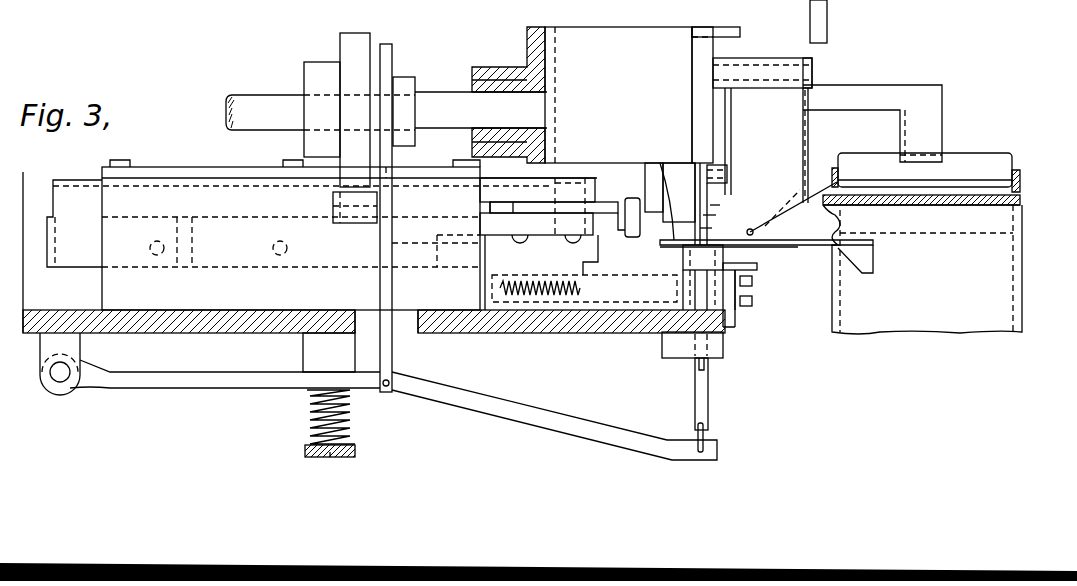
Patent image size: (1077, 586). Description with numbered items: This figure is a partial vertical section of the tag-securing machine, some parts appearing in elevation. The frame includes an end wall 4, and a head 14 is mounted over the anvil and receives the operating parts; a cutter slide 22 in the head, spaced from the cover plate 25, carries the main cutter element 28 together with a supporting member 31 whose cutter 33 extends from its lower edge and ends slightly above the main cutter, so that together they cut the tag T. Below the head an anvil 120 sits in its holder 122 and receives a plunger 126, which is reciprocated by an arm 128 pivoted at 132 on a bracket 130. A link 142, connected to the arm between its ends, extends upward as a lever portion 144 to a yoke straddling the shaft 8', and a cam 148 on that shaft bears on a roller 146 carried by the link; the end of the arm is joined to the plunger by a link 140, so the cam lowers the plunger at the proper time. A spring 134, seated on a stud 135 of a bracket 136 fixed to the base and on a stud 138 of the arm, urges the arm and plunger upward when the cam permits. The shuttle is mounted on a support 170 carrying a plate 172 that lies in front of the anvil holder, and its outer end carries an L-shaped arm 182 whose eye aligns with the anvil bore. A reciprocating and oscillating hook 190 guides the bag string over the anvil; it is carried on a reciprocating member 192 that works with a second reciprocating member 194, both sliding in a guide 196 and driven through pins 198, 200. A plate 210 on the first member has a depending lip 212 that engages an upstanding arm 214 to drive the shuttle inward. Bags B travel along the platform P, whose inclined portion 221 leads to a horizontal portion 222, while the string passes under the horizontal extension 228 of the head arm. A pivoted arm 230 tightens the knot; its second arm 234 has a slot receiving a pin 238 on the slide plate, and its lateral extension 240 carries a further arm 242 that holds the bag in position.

The end wall 4 is at (527, 45).
The shaft 8' is at (386, 98).
The head 14 is at (612, 37).
The cutter slide 22 is at (685, 172).
The cover plate 25 is at (740, 30).
The main cutter element 28 is at (708, 218).
The supporting member 31 is at (715, 207).
The cutter 33 is at (703, 232).
The anvil 120 is at (683, 250).
The anvil holder 122 is at (662, 348).
The plunger 126 is at (712, 398).
The arm 128 is at (468, 405).
The bracket 130 is at (83, 355).
The pivot 132 is at (815, 72).
The spring 134 is at (307, 420).
The stud 135 is at (332, 452).
The bracket 136 is at (303, 352).
The stud 138 is at (307, 400).
The link 140 is at (710, 438).
The link 142 is at (380, 243).
The lever 144 is at (405, 335).
The roller 146 is at (333, 200).
The cam 148 is at (340, 48).
The support 170 is at (567, 300).
The plate 172 is at (747, 295).
The L-shaped arm 182 is at (745, 262).
The hook 190 is at (639, 198).
The reciprocating member 192 is at (536, 238).
The second reciprocating member 194 is at (566, 178).
The guide 196 is at (310, 237).
The pin 198 is at (286, 245).
The pin 200 is at (153, 246).
The plate 210 is at (541, 272).
The depending lip 212 is at (598, 245).
The upstanding arm 214 is at (575, 243).
The inclined portion 221 is at (1003, 290).
The horizontal portion 222 is at (935, 205).
The horizontal extension 228 is at (752, 228).
The arm 230 is at (812, 140).
The second arm 234 is at (762, 115).
The pin 238 is at (740, 160).
The lateral extension 240 is at (885, 97).
The second arm 242 is at (930, 135).
The filled bag B is at (960, 160).
The platform P is at (1020, 186).
The tag T is at (660, 175).